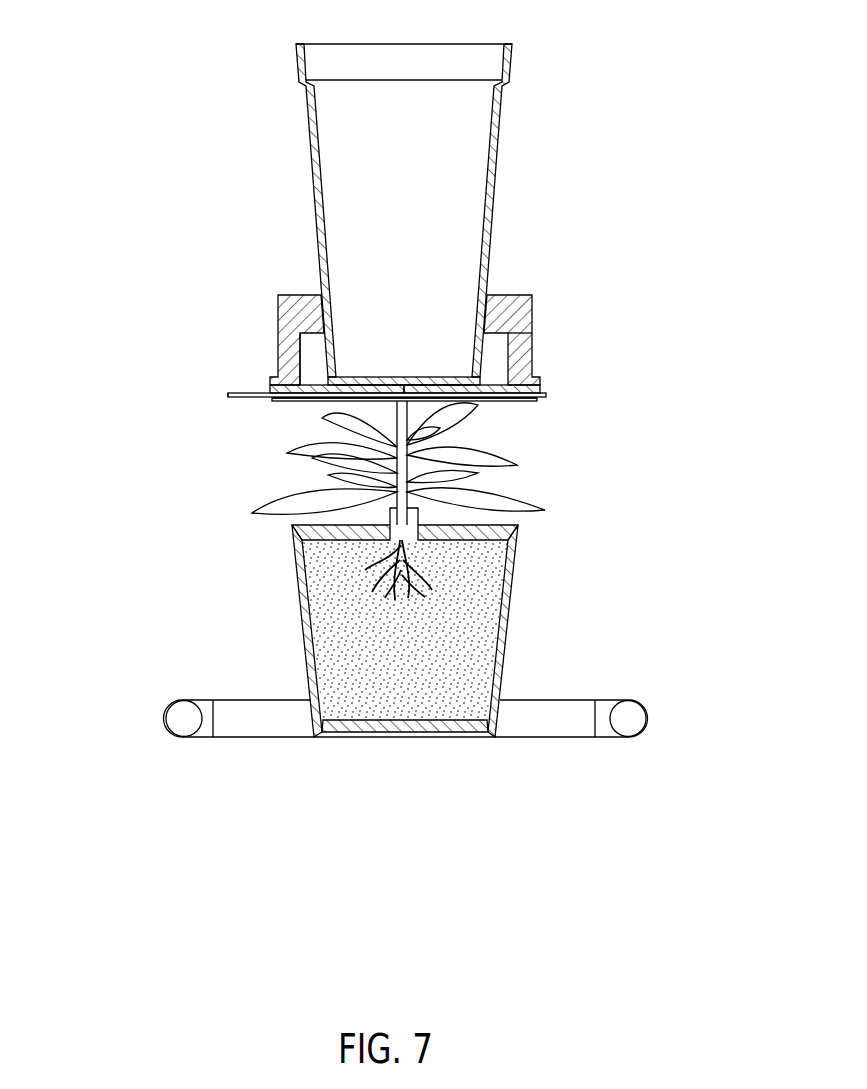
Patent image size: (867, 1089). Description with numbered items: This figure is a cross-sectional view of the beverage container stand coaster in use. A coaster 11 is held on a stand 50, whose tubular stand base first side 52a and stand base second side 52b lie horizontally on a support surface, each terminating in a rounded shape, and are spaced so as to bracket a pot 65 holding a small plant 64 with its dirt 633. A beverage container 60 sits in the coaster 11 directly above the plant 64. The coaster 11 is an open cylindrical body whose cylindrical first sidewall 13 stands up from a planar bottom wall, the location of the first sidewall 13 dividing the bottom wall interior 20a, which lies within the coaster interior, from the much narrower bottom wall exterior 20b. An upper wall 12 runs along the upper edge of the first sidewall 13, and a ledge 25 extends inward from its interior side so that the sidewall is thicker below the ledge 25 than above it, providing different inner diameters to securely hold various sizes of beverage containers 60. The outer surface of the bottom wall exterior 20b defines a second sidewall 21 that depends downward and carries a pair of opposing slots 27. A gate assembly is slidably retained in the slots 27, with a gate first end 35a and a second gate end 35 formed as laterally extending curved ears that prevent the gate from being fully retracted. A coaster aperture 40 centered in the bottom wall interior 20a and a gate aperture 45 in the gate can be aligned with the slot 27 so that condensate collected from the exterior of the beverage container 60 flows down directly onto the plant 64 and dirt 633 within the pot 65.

The coaster 11 is at (276, 276).
The upper wall 12 is at (526, 295).
The first sidewall 13 is at (277, 313).
The bottom wall interior 20a is at (497, 385).
The bottom wall exterior 20b is at (272, 385).
The second sidewall 21 is at (272, 383).
The ledge 25 is at (510, 332).
The slot 27 is at (268, 398).
The gate end 35 is at (545, 398).
The gate first end 35a is at (228, 394).
The coaster aperture 40 is at (373, 383).
The gate aperture 45 is at (388, 402).
The stand 50 is at (226, 746).
The stand base first side 52a is at (242, 700).
The stand base second side 52b is at (587, 700).
The beverage container 60 is at (489, 260).
The plant 64 is at (540, 500).
The pot 65 is at (512, 585).
The growing medium 633 is at (325, 585).